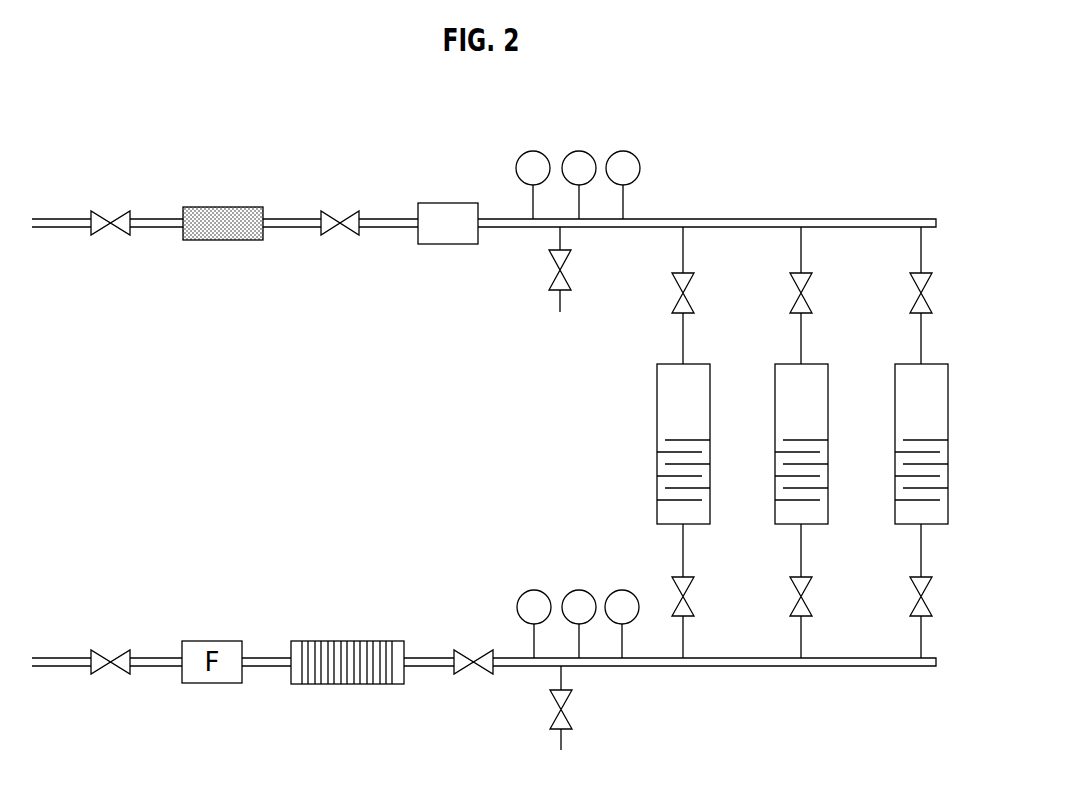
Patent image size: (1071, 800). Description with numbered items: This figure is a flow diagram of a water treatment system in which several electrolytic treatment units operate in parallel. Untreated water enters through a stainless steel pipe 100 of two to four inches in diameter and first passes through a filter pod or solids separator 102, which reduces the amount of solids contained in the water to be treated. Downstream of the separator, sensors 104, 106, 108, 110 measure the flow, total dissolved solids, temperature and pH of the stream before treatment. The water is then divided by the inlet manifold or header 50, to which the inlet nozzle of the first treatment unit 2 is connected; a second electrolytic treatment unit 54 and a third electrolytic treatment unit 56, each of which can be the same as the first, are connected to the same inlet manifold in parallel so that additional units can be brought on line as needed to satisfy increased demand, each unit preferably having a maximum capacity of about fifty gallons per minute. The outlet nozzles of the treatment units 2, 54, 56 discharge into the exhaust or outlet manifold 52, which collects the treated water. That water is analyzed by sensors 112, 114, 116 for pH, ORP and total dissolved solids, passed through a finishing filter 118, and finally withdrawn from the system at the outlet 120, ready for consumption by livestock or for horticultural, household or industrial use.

The stainless steel pipe 100 is at (76, 194).
The filter pod or solids separator 102 is at (222, 207).
The sensor 104 is at (447, 203).
The sensor 106 is at (533, 151).
The sensor 108 is at (579, 151).
The sensor 110 is at (623, 151).
The inlet manifold 50 is at (757, 219).
The treatment unit 2 is at (676, 407).
The second electrolytic treatment unit 54 is at (788, 407).
The third electrolytic treatment unit 56 is at (908, 407).
The exhaust manifold 52 is at (848, 666).
The sensor 112 is at (622, 590).
The sensor 114 is at (579, 590).
The sensor 116 is at (534, 590).
The finishing filter 118 is at (345, 641).
The treated water outlet 120 is at (76, 680).